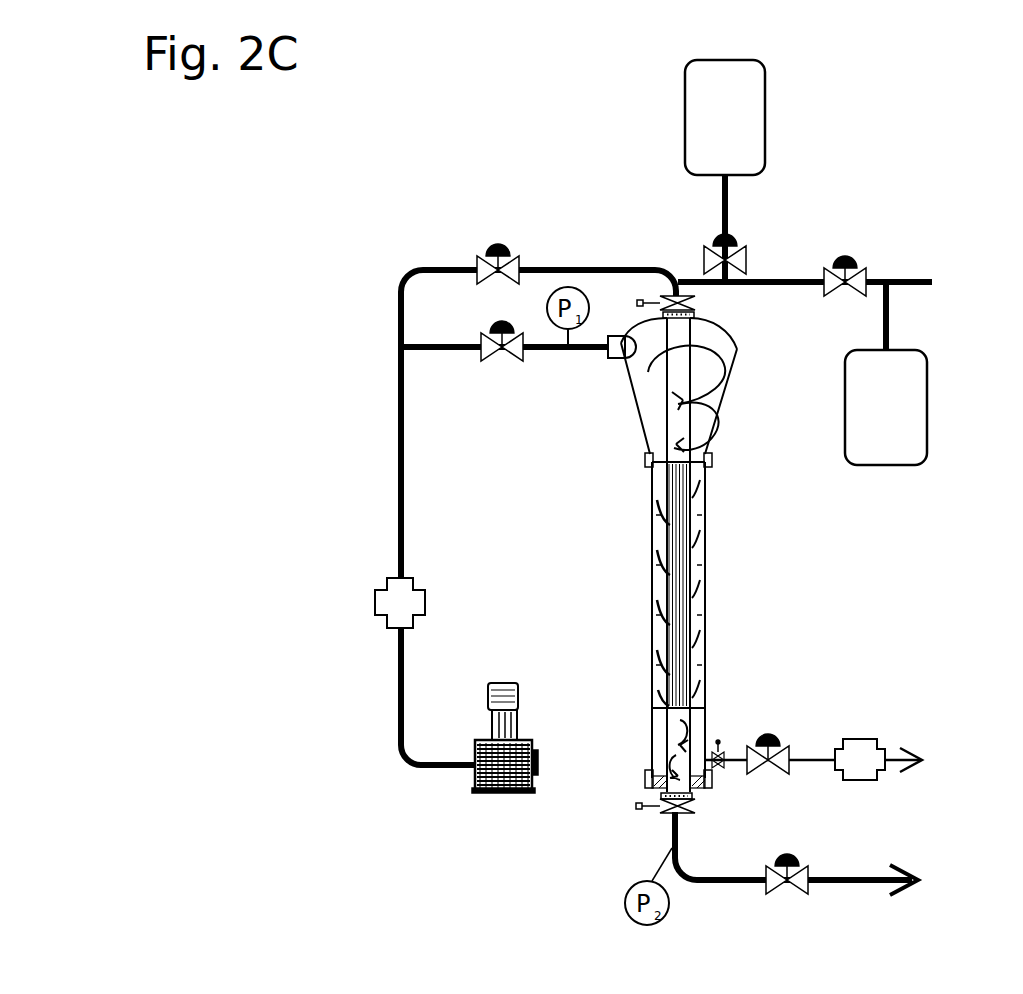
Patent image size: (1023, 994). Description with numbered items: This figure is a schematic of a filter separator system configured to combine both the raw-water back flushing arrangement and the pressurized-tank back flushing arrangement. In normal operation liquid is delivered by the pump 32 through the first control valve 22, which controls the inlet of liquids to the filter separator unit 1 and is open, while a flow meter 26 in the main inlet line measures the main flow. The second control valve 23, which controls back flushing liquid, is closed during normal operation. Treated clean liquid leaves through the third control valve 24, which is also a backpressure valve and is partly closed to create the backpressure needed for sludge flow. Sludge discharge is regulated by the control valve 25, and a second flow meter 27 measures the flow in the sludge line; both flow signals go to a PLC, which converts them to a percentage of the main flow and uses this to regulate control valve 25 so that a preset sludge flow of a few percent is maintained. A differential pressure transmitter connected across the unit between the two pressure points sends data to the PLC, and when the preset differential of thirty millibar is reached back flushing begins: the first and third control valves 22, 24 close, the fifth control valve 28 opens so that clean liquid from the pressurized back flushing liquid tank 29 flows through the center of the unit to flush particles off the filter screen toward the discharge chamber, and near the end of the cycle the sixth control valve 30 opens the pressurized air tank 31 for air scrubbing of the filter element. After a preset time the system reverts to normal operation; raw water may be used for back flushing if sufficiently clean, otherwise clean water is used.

The filter separator unit 1 is at (658, 554).
The first control valve 22 is at (501, 358).
The second control valve 23 is at (498, 240).
The third control valve 24 is at (788, 897).
The control valve 25 is at (768, 721).
The flow meter 26 is at (373, 603).
The second flow meter 27 is at (867, 734).
The fifth control valve 28 is at (737, 234).
The pressurized back flushing liquid tank 29 is at (751, 117).
The sixth control valve 30 is at (857, 256).
The pressurized air tank 31 is at (911, 410).
The pump 32 is at (505, 763).